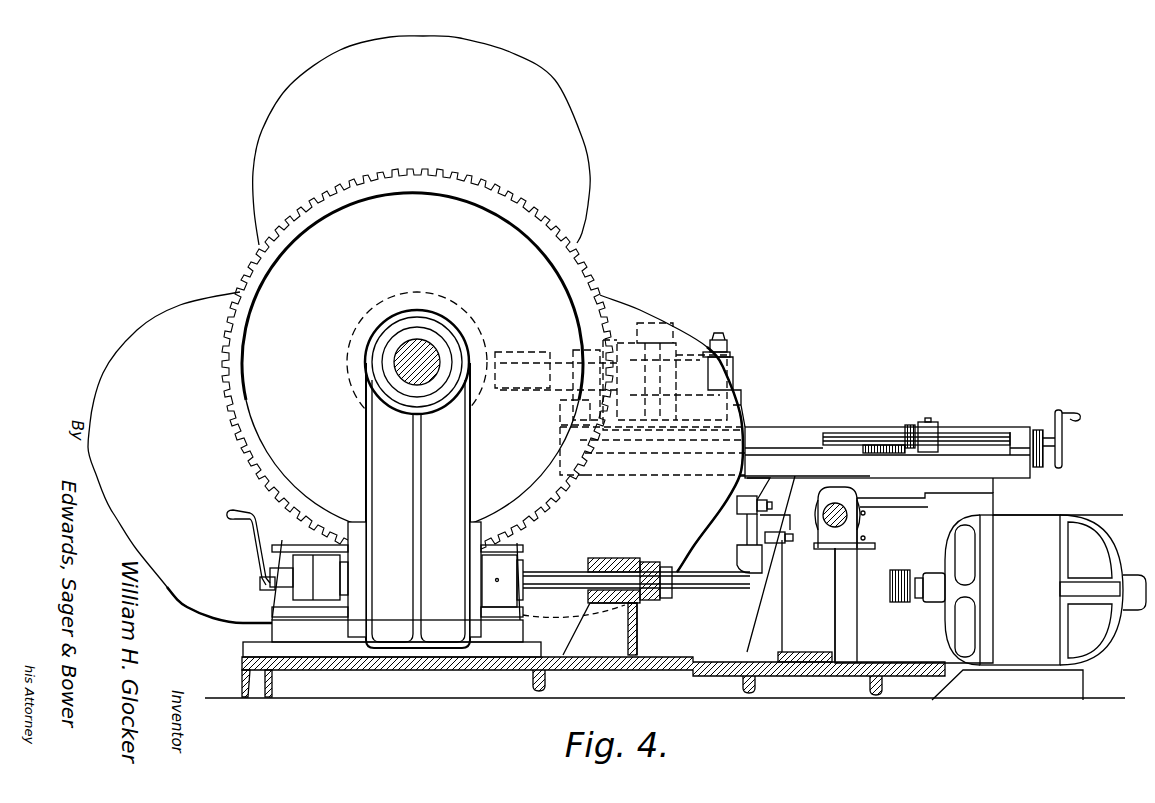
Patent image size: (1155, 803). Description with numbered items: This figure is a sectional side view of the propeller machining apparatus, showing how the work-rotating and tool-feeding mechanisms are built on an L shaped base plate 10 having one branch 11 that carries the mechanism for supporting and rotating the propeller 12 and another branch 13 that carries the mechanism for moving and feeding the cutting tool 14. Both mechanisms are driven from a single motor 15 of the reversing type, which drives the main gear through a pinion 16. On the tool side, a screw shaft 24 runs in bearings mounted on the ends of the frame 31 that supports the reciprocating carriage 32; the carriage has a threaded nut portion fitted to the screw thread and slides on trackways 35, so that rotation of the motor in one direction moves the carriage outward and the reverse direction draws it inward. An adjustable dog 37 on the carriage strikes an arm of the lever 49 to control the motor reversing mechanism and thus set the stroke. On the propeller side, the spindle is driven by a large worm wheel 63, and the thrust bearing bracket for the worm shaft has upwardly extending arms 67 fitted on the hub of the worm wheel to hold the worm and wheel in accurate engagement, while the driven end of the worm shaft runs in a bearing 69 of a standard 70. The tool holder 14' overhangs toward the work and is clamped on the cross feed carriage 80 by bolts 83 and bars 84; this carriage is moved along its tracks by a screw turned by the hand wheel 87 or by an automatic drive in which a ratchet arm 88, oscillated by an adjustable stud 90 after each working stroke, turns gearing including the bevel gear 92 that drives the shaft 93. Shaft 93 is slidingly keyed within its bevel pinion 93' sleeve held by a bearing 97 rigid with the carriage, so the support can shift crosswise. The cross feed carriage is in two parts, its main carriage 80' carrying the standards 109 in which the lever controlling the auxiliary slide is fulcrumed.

The L shaped base plate 10 is at (878, 690).
The branch of base plate 11 is at (242, 668).
The propeller 12 is at (565, 145).
The branch of base plate 13 is at (1050, 690).
The cutting tool 14 is at (557, 348).
The tool holder 14' is at (576, 373).
The motor 15 is at (1045, 590).
The pinion 16 is at (900, 570).
The screw shaft 24 is at (832, 530).
The frame 31 is at (914, 570).
The reciprocating carriage 32 is at (975, 487).
The trackways 35 is at (965, 505).
The adjustable dog 37 is at (737, 503).
The lever 49 is at (748, 570).
The worm wheel 63 is at (523, 270).
The upwardly extending arms 67 is at (380, 460).
The bearing 69 is at (617, 557).
The standard 70 is at (608, 632).
The cross feed carriage 80 is at (770, 386).
The main carriage 80' is at (689, 423).
The bolts 83 is at (671, 376).
The bars 84 is at (730, 357).
The hand wheel 87 is at (1062, 440).
The ratchet arm 88 is at (760, 522).
The adjustable stud 90 is at (780, 545).
The bevel gear 92 is at (897, 452).
The shaft 93 is at (916, 419).
The bevel pinion 93' is at (920, 417).
The bearing 97 is at (932, 428).
The standards 109 is at (572, 400).